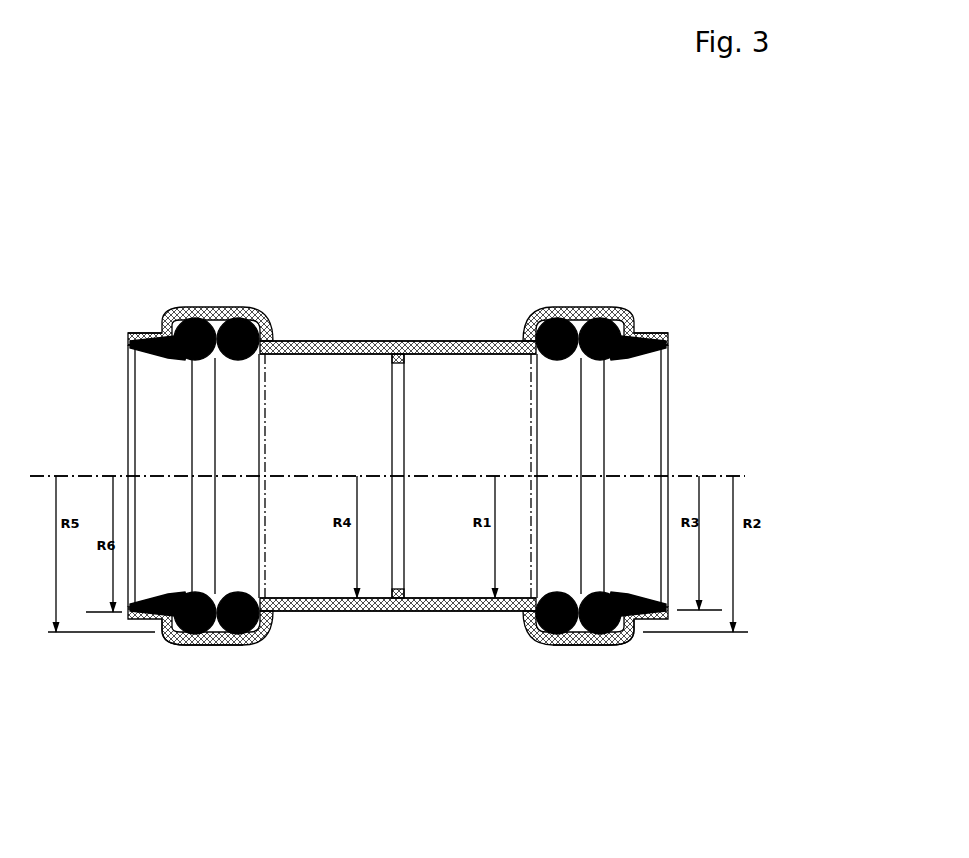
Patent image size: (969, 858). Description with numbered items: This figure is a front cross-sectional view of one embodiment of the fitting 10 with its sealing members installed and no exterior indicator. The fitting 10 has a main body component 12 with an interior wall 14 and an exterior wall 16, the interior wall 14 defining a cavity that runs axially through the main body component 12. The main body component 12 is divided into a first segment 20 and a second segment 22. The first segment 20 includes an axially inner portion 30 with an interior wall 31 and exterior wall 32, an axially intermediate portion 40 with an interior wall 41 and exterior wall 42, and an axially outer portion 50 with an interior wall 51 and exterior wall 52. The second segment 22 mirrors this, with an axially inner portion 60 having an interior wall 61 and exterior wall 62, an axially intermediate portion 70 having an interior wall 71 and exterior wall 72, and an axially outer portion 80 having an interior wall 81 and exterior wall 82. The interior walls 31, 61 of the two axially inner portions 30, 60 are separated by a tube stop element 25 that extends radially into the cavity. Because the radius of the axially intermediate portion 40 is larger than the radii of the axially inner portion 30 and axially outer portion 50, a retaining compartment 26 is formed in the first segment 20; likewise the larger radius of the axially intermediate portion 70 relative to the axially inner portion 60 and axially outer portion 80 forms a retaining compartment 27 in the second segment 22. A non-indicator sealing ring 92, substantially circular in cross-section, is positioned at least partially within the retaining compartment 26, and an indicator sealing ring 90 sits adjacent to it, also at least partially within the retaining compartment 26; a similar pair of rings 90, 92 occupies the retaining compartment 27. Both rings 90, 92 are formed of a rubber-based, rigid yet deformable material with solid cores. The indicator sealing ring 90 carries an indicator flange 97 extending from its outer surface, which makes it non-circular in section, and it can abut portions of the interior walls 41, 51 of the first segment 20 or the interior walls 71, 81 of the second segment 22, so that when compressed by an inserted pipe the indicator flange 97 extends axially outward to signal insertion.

The fitting 10 is at (588, 203).
The main body component 12 is at (345, 341).
The interior wall 14 is at (452, 340).
The exterior wall 16 is at (449, 357).
The first segment 20 is at (573, 765).
The second segment 22 is at (247, 743).
The tube stop element 25 is at (393, 358).
The retaining compartment 26 is at (570, 640).
The retaining compartment 27 is at (228, 638).
The axially inner portion 30 is at (468, 655).
The interior wall 31 is at (451, 598).
The exterior wall 32 is at (437, 620).
The axially intermediate portion 40 is at (597, 670).
The interior wall 41 is at (590, 357).
The exterior wall 42 is at (605, 640).
The axially outer portion 50 is at (672, 318).
The interior wall 51 is at (666, 346).
The exterior wall 52 is at (648, 333).
The axially inner portion 60 is at (357, 655).
The interior wall 61 is at (305, 598).
The exterior wall 62 is at (313, 627).
The axially intermediate portion 70 is at (218, 665).
The interior wall 71 is at (205, 358).
The exterior wall 72 is at (195, 640).
The axially outer portion 80 is at (130, 277).
The interior wall 81 is at (130, 346).
The exterior wall 82 is at (147, 332).
The indicator sealing ring 90 is at (192, 596).
The non-indicator sealing ring 92 is at (238, 596).
The indicator flange 97 is at (157, 355).